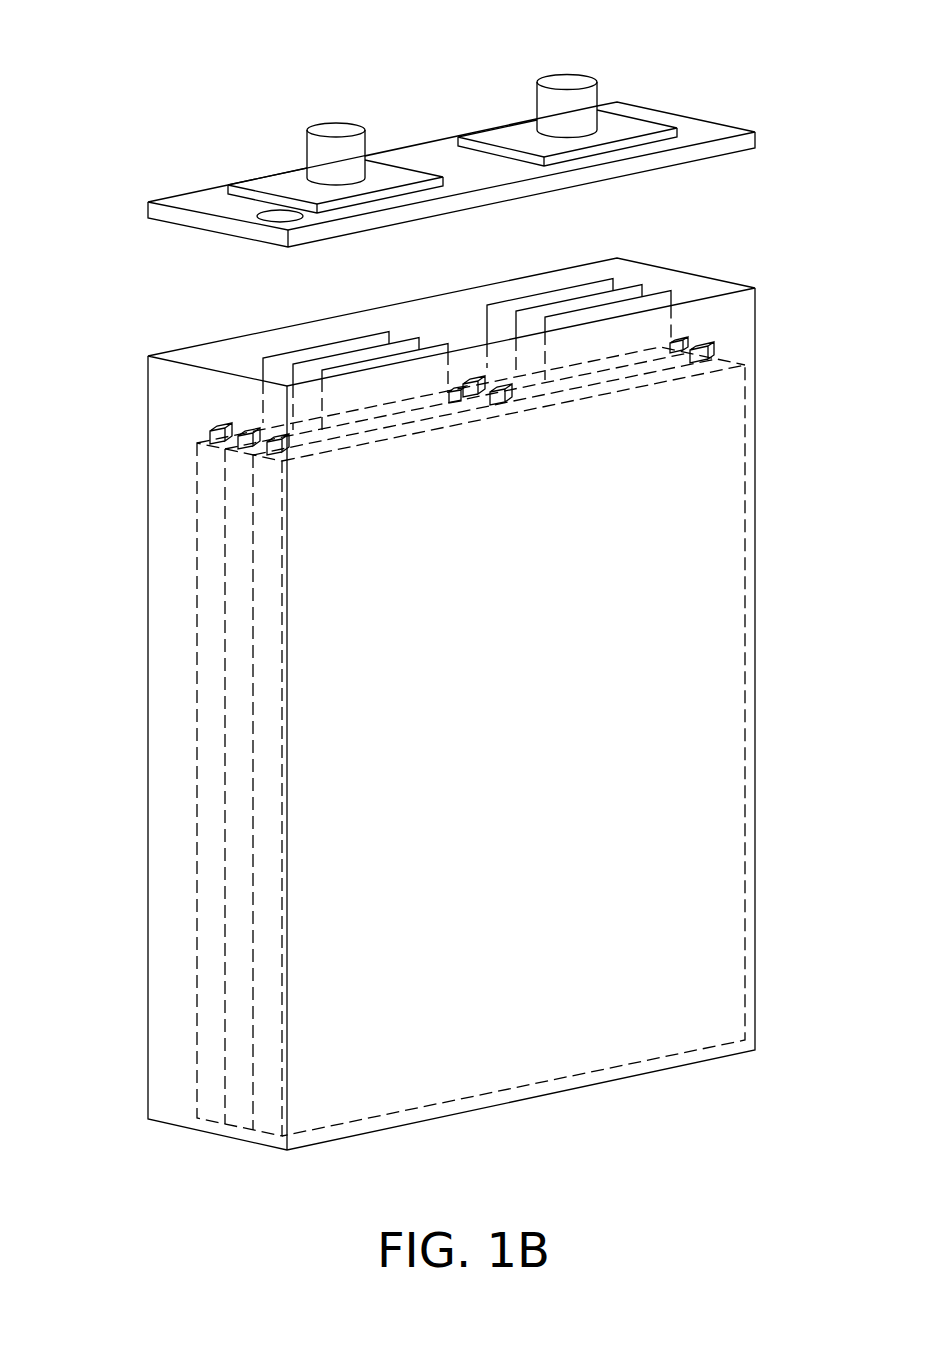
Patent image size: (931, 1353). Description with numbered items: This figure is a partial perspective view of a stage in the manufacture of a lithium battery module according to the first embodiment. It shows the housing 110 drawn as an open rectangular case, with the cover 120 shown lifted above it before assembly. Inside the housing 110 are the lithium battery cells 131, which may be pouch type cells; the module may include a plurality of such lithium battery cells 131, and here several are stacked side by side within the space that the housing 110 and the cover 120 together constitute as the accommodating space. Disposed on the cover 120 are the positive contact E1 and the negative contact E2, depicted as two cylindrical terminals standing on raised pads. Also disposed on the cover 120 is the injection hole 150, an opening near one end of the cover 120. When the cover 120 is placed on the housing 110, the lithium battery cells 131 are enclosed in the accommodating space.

The housing 110 is at (752, 316).
The cover 120 is at (752, 140).
The lithium battery cell 131 is at (267, 625).
The injection hole 150 is at (260, 213).
The positive contact E1 is at (331, 126).
The negative contact E2 is at (559, 80).